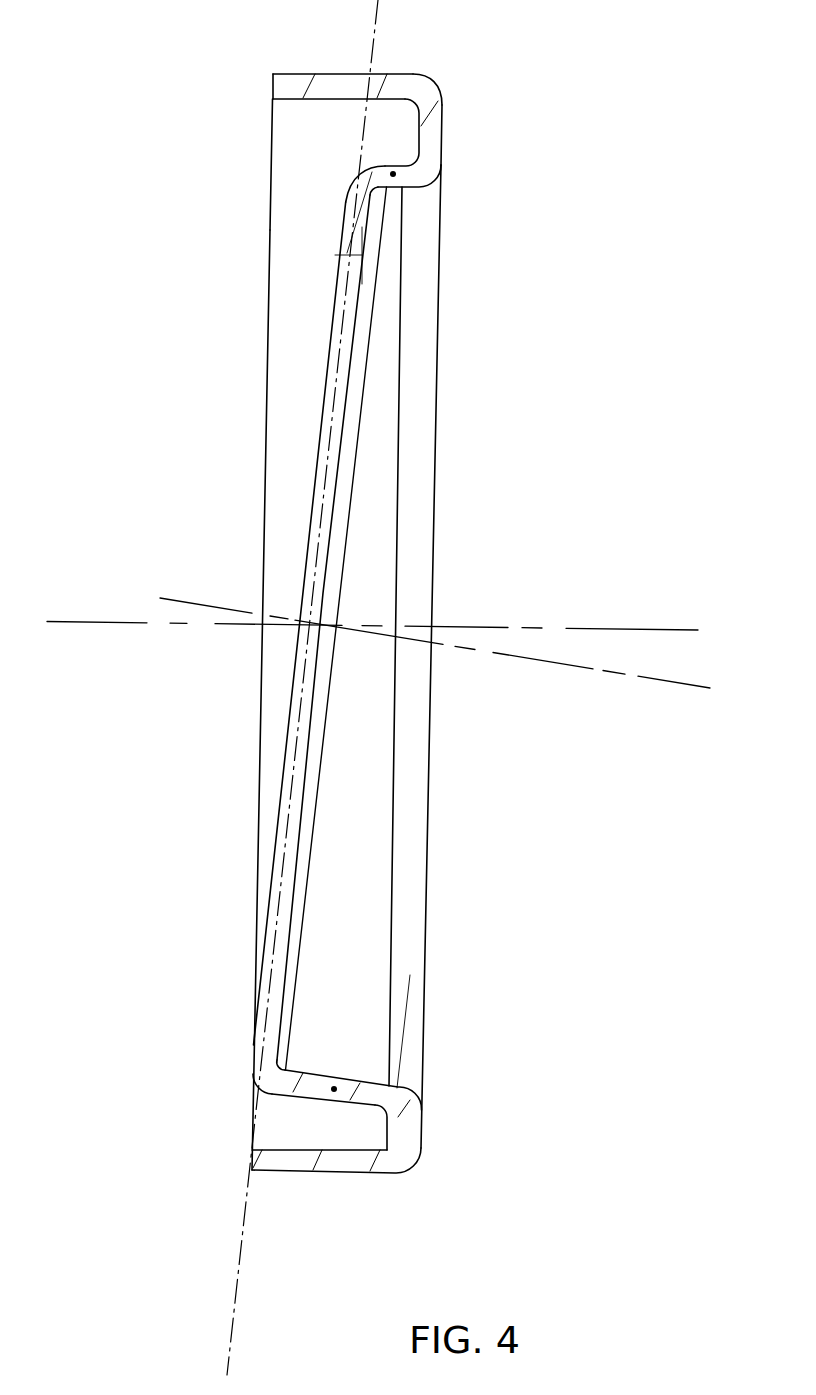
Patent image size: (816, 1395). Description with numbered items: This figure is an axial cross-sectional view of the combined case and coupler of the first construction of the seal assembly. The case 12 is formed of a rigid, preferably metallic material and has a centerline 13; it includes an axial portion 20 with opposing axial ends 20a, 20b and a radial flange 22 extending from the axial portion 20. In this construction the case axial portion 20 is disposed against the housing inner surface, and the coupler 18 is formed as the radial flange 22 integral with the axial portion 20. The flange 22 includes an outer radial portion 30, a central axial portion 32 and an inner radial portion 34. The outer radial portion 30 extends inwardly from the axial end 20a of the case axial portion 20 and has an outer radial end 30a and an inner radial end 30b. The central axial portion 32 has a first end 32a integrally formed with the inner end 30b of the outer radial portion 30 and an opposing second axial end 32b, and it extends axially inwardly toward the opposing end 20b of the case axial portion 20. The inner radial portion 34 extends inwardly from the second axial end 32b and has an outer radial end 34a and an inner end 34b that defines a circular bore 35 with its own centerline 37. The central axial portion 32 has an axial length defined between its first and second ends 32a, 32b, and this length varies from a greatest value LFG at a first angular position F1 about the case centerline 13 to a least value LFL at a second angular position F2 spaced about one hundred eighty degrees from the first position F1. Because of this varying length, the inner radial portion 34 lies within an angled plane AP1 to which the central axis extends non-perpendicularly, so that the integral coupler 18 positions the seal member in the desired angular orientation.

The case 12 is at (349, 1212).
The centerline 13 is at (667, 629).
The coupler 18 is at (438, 228).
The axial portion 20 is at (322, 62).
The axial end 20a is at (413, 78).
The opposing end 20b is at (287, 74).
The radial flange 22 is at (455, 135).
The outer radial portion 30 is at (446, 111).
The outer radial end 30a is at (405, 1148).
The inner radial end 30b is at (414, 1113).
The central axial portion 32 is at (374, 157).
The first end 32a is at (388, 1105).
The second axial end 32b is at (278, 1084).
The inner radial portion 34 is at (334, 211).
The outer radial end 34a is at (254, 1057).
The inner end 34b is at (262, 1000).
The circular bore 35 is at (316, 559).
The centerline 37 is at (681, 686).
The angled plane AP1 is at (373, 31).
The first angular position F1 is at (334, 1092).
The second angular position F2 is at (393, 171).
The least value of axial length LFL is at (292, 264).
The greatest value of axial length LFG is at (397, 992).